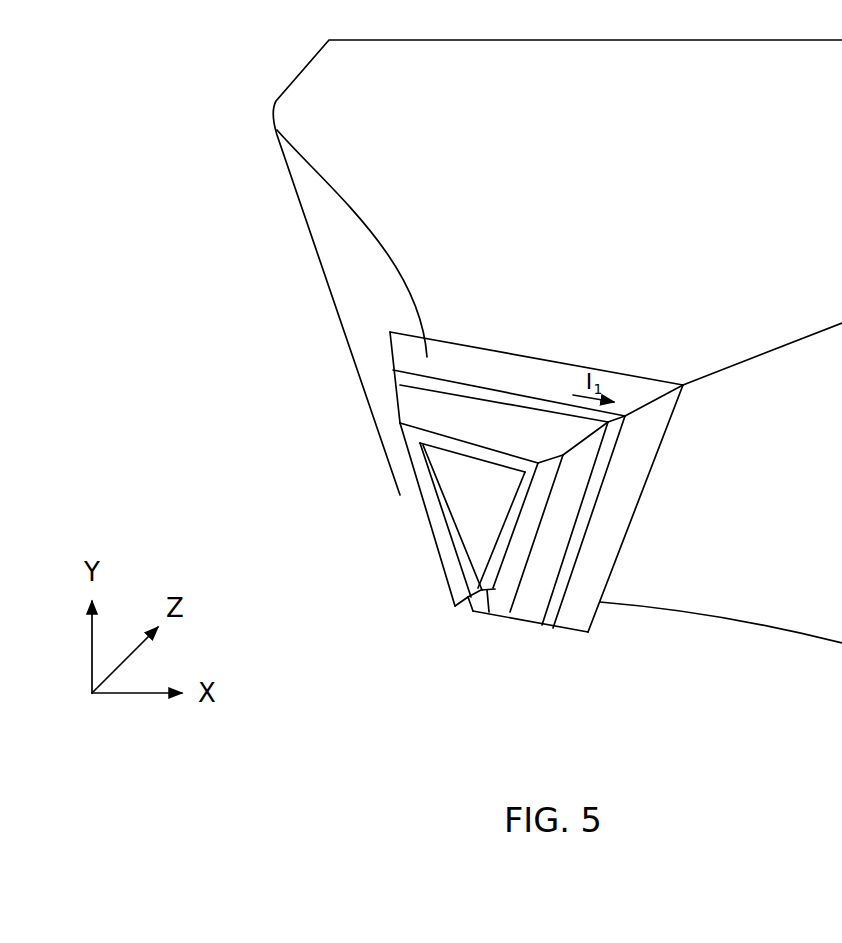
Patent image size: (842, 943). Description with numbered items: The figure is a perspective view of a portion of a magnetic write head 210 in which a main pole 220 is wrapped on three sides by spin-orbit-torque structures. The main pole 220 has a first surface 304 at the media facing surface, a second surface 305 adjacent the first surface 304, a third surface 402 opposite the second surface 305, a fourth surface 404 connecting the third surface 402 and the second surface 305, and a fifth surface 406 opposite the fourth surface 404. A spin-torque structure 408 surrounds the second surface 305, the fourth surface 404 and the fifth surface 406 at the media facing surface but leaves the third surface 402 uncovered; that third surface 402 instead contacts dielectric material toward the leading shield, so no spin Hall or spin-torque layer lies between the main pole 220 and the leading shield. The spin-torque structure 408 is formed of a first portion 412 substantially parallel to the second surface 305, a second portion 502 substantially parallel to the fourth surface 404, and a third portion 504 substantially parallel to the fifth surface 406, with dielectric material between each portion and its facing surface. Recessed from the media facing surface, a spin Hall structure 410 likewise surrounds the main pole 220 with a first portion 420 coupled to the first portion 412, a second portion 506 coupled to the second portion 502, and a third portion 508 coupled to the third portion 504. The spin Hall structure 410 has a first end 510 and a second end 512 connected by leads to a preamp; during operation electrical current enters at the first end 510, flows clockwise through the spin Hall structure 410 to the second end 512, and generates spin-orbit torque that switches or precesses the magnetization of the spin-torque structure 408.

The magnetic write head 210 is at (261, 98).
The main pole 220 is at (377, 475).
The first surface 304 is at (474, 503).
The second surface 305 is at (447, 450).
The third surface 402 is at (487, 615).
The fourth surface 404 is at (474, 542).
The fifth surface 406 is at (510, 528).
The spin-torque structure 408 is at (430, 416).
The spin Hall structure 410 is at (427, 357).
The first portion 412 is at (458, 410).
The first portion 420 is at (495, 362).
The second portion 502 is at (433, 508).
The third portion 504 is at (527, 603).
The second portion 506 is at (400, 385).
The third portion 508 is at (623, 492).
The first end 510 is at (477, 611).
The second end 512 is at (568, 630).